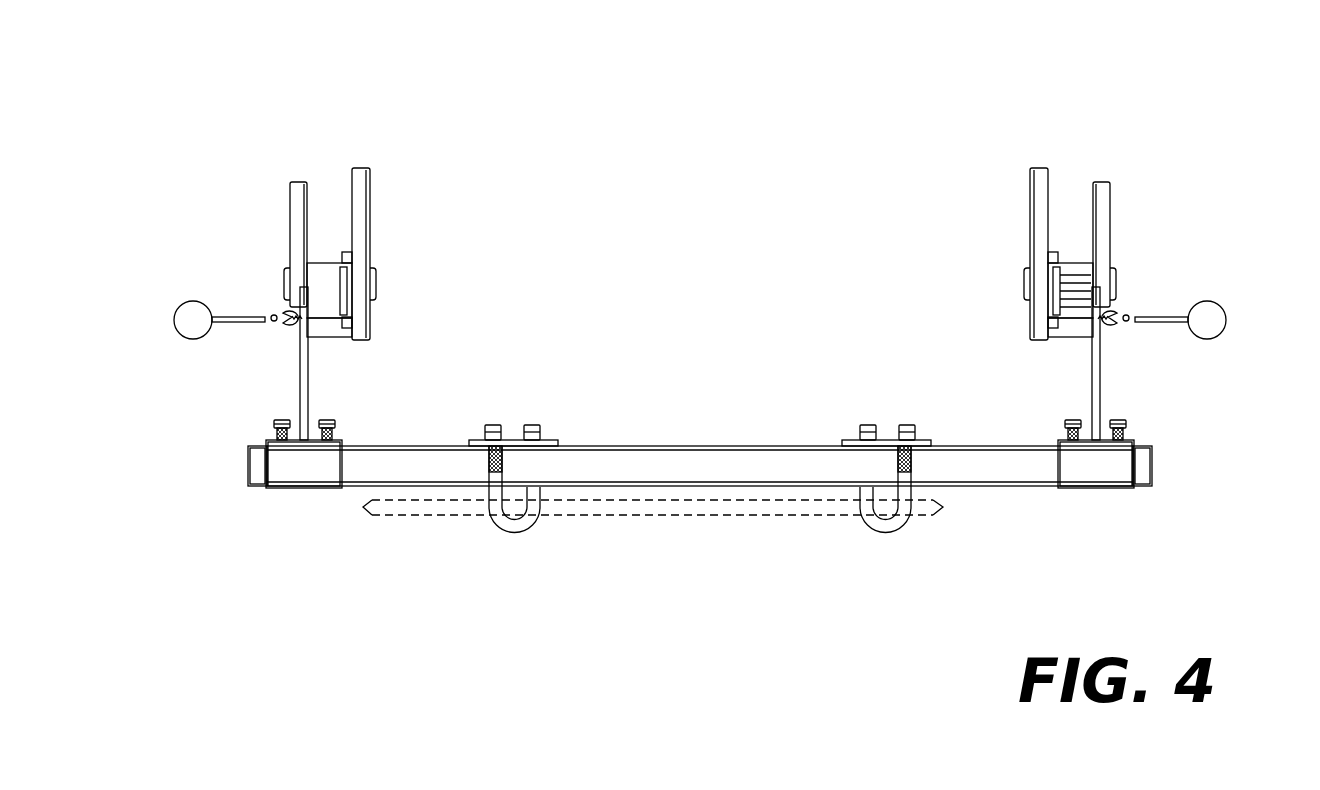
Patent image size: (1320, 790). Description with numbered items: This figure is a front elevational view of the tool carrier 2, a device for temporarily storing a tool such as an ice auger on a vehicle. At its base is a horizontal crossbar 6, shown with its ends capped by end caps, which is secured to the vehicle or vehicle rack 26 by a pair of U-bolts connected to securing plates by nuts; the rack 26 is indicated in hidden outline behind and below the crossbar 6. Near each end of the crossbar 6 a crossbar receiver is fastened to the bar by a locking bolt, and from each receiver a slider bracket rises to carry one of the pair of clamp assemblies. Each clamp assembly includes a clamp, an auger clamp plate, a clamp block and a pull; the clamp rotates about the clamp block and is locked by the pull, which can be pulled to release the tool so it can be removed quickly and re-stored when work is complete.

The tool carrier 2 is at (193, 134).
The base crossbar 6 is at (420, 445).
The vehicle rack 26 is at (695, 516).